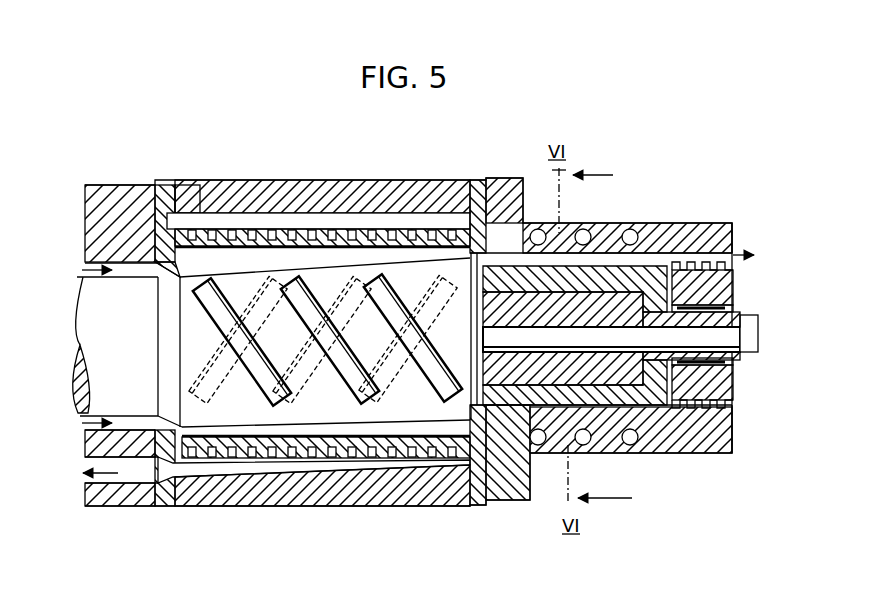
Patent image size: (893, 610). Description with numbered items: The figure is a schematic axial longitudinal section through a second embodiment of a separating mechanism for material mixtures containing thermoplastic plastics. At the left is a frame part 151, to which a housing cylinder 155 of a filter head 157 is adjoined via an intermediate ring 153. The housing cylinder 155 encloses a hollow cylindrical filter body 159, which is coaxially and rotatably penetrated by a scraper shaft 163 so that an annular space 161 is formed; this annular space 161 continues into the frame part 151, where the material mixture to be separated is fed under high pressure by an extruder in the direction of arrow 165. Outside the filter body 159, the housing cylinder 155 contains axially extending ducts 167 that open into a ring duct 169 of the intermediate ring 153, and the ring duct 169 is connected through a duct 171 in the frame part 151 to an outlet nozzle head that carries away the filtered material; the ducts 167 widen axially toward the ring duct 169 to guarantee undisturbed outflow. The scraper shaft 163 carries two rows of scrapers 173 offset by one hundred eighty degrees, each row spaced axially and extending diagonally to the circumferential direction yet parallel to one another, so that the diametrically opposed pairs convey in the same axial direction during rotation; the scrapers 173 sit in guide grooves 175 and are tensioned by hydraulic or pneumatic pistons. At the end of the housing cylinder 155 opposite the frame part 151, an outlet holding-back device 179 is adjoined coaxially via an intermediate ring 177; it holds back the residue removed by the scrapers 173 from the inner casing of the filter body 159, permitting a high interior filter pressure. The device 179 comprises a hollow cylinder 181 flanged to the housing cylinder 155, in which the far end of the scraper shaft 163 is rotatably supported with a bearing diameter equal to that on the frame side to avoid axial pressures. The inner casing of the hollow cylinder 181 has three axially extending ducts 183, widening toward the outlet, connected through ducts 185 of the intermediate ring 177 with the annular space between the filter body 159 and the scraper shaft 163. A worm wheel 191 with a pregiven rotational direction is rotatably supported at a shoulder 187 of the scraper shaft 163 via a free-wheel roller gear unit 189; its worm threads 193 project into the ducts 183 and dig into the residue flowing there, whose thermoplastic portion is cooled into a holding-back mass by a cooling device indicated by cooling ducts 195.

The frame part 151 is at (113, 197).
The intermediate ring 153 is at (162, 190).
The housing cylinder 155 is at (291, 198).
The filter head 157 is at (391, 166).
The filter body 159 is at (243, 235).
The annular space 161 is at (329, 252).
The scraper shaft 163 is at (88, 350).
The arrow 165 is at (78, 268).
The ducts 167 is at (213, 220).
The ring duct 169 is at (186, 198).
The duct 171 is at (122, 482).
The scrapers 173 is at (200, 383).
The guide grooves 175 is at (197, 297).
The intermediate ring 177 is at (481, 210).
The outlet holding-back device 179 is at (688, 220).
The hollow cylinder 181 is at (553, 445).
The ducts 183 is at (643, 258).
The ducts 185 is at (494, 222).
The shoulder 187 is at (735, 368).
The free-wheel roller gear unit 189 is at (713, 388).
The worm wheel 191 is at (728, 395).
The worm threads 193 is at (736, 240).
The cooling ducts 195 is at (640, 443).